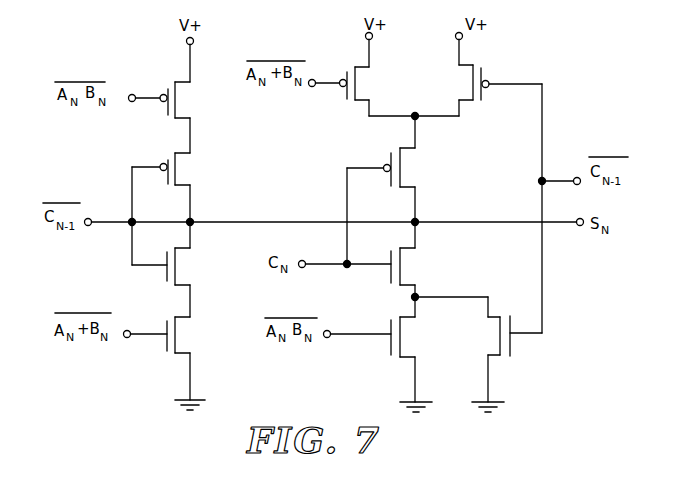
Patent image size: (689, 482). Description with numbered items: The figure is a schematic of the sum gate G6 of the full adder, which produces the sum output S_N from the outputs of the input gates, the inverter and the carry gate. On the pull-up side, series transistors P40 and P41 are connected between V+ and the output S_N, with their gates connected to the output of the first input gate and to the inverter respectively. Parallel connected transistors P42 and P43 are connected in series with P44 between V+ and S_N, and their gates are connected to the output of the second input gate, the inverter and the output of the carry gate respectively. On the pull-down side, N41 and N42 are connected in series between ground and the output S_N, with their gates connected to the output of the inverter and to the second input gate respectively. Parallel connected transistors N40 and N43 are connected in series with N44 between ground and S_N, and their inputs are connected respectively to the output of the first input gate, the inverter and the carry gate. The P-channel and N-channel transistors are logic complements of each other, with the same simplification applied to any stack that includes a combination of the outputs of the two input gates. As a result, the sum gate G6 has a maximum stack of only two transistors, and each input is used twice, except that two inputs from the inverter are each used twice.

The series transistor P40 is at (171, 100).
The series transistor P41 is at (172, 169).
The transistor N41 is at (173, 266).
The transistor N42 is at (169, 335).
The parallel connected transistor P42 is at (356, 83).
The parallel connected transistor P43 is at (486, 82).
The transistor P44 is at (395, 167).
The transistor N44 is at (373, 266).
The parallel connected transistor N40 is at (385, 337).
The parallel connected transistor N43 is at (502, 336).
The sum gate G6 is at (528, 64).